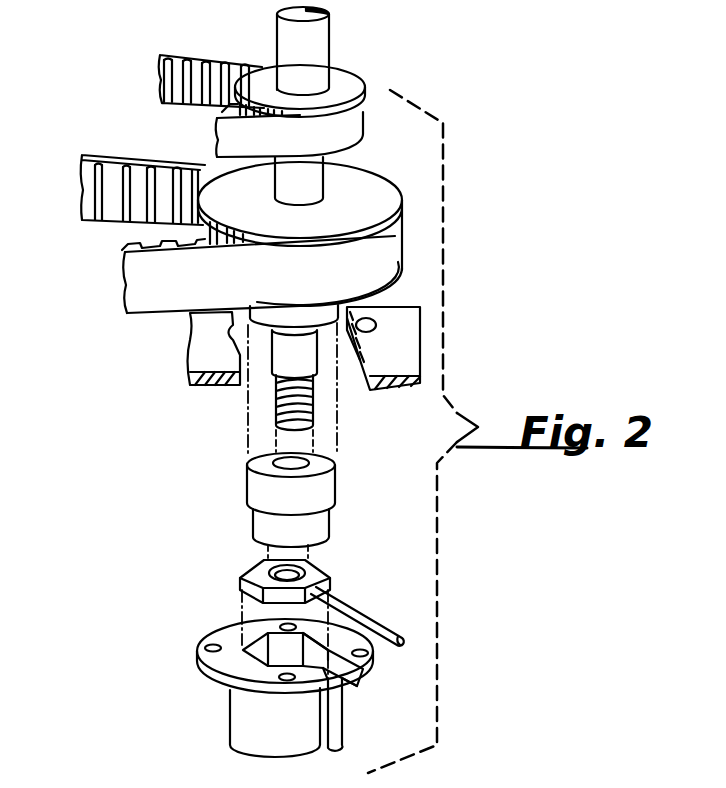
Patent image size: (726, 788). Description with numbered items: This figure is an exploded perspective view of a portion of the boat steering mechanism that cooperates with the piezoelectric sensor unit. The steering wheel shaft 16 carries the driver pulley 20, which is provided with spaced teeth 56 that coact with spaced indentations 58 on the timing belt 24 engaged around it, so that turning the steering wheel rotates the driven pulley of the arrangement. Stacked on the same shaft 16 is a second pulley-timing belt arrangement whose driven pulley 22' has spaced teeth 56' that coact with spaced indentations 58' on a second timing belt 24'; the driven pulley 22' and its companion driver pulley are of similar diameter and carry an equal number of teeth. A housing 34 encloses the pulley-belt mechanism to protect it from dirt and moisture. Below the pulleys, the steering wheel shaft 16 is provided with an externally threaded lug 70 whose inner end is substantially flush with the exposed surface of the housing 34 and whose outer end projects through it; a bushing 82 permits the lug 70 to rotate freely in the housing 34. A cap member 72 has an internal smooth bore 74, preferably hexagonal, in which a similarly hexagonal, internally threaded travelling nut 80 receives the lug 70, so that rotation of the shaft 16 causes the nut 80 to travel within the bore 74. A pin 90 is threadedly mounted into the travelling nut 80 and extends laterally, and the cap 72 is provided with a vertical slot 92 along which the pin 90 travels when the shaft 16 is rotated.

The steering wheel shaft 16 is at (298, 38).
The driver pulley 20 is at (370, 195).
The driven pulley 22' is at (332, 66).
The timing belt 24 is at (225, 294).
The timing belt 24' is at (312, 134).
The housing 34 is at (205, 358).
The spaced teeth 56 is at (182, 260).
The spaced teeth 56' is at (221, 129).
The spaced indentations 58 is at (127, 212).
The spaced indentations 58' is at (179, 84).
The externally threaded lug 70 is at (277, 405).
The cap member 72 is at (253, 717).
The internal smooth bore 74 is at (240, 650).
The travelling nut 80 is at (250, 582).
The bushing 82 is at (273, 517).
The pin 90 is at (350, 618).
The vertical slot 92 is at (323, 718).